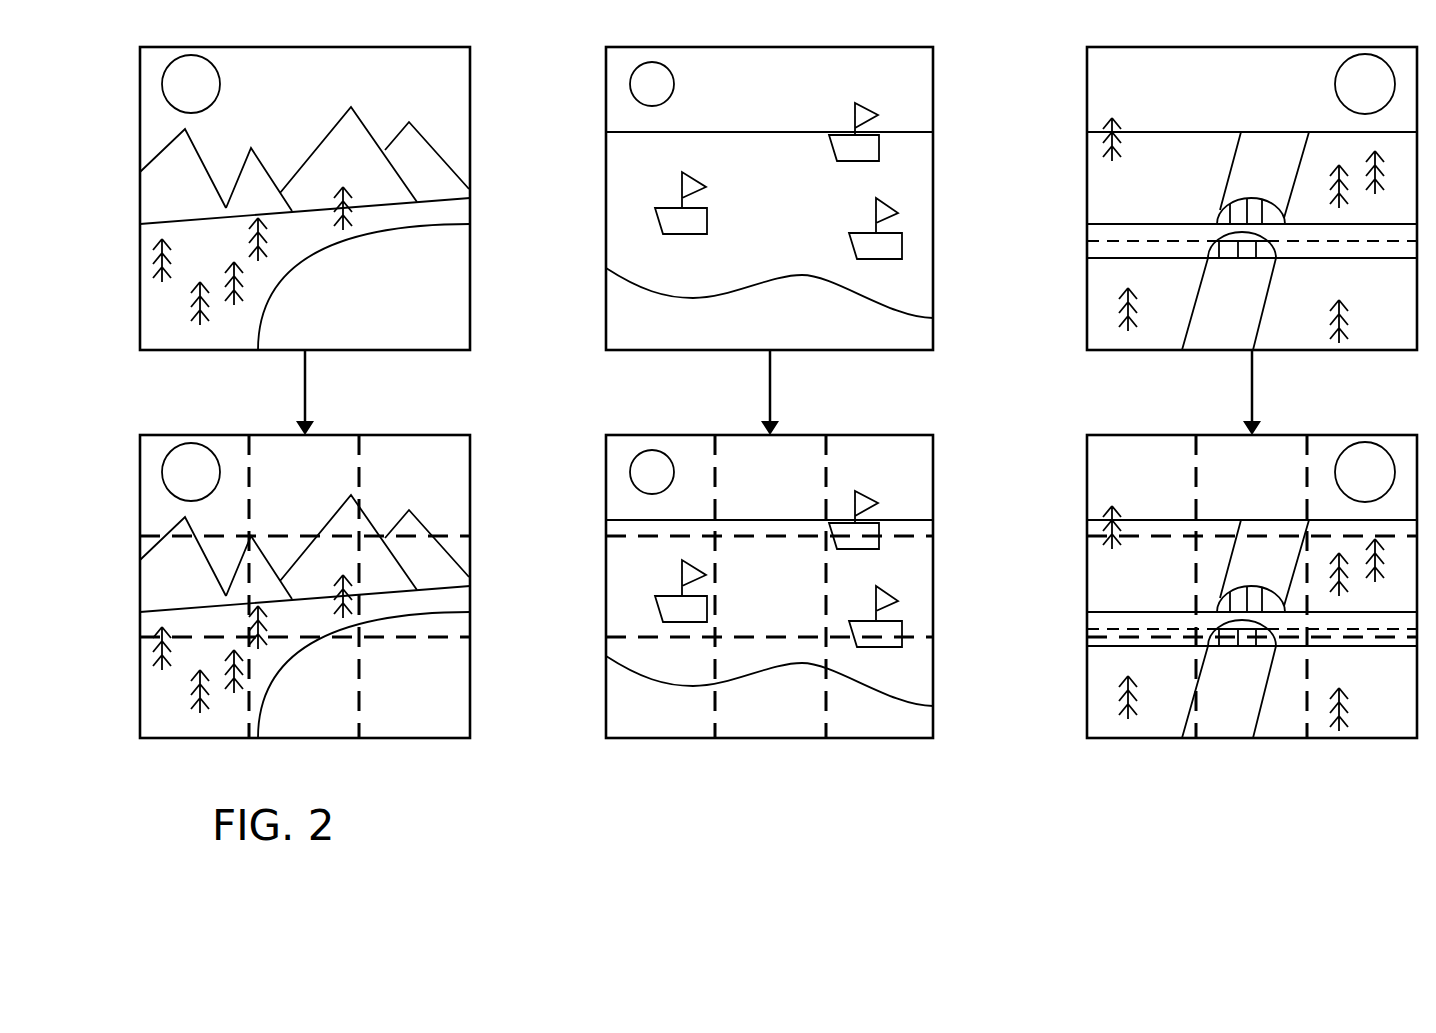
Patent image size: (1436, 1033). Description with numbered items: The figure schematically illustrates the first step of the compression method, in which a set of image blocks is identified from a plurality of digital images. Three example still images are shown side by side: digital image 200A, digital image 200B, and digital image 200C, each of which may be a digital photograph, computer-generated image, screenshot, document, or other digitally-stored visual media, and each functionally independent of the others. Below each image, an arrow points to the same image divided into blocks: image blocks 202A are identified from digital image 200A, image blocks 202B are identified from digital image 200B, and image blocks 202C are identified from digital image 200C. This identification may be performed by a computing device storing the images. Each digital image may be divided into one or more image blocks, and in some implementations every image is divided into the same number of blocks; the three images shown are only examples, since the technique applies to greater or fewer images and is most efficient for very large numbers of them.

The digital image 200A is at (470, 113).
The digital image 200B is at (606, 282).
The digital image 200C is at (1087, 80).
The image blocks 202A is at (383, 738).
The image blocks 202B is at (770, 738).
The image blocks 202C is at (1232, 738).